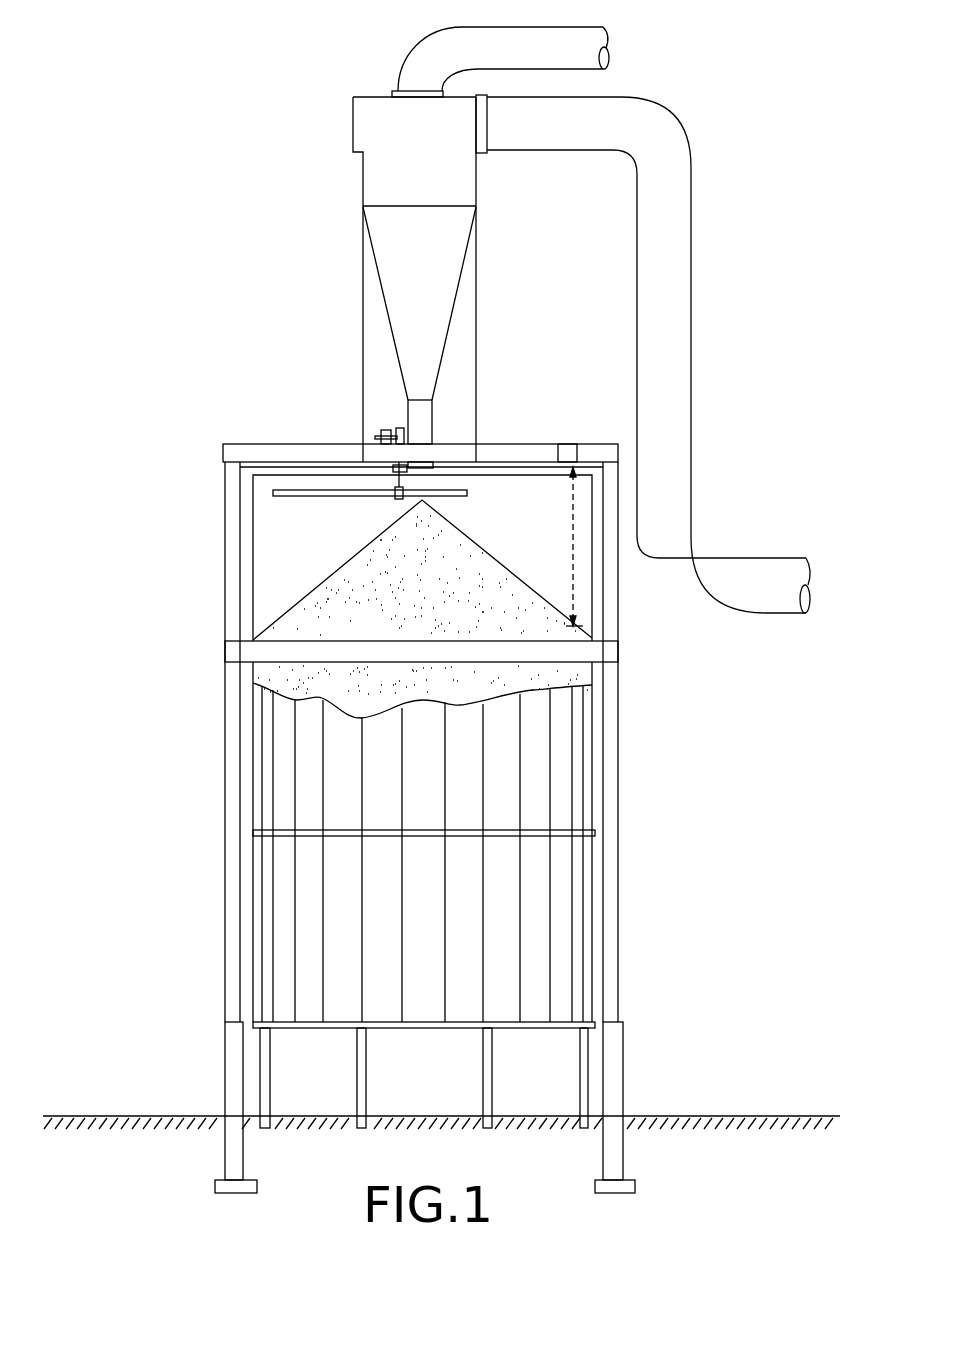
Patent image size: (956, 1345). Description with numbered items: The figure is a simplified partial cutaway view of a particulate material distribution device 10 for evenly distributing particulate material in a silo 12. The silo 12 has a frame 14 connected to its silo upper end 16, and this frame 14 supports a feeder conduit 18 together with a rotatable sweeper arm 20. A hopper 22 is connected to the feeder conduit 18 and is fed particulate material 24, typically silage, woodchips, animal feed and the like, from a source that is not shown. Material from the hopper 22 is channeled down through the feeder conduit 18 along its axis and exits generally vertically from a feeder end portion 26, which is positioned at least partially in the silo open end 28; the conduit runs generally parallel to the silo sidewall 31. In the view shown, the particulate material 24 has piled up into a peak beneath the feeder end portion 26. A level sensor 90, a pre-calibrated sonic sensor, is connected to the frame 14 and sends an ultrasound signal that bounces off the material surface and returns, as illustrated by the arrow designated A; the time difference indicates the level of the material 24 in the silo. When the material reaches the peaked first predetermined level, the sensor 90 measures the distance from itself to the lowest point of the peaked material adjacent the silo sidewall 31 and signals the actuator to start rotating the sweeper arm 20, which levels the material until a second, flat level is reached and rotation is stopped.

The particulate material distribution device 10 is at (196, 149).
The silo 12 is at (646, 712).
The frame 14 is at (517, 448).
The silo upper end 16 is at (165, 471).
The feeder conduit 18 is at (427, 412).
The rotatable sweeper arm 20 is at (328, 497).
The hopper 22 is at (440, 282).
The particulate material 24 is at (480, 565).
The feeder end portion 26 is at (420, 473).
The silo open end 28 is at (265, 492).
The silo sidewall 31 is at (613, 858).
The level sensor 90 is at (567, 447).
The arrow A is at (573, 530).